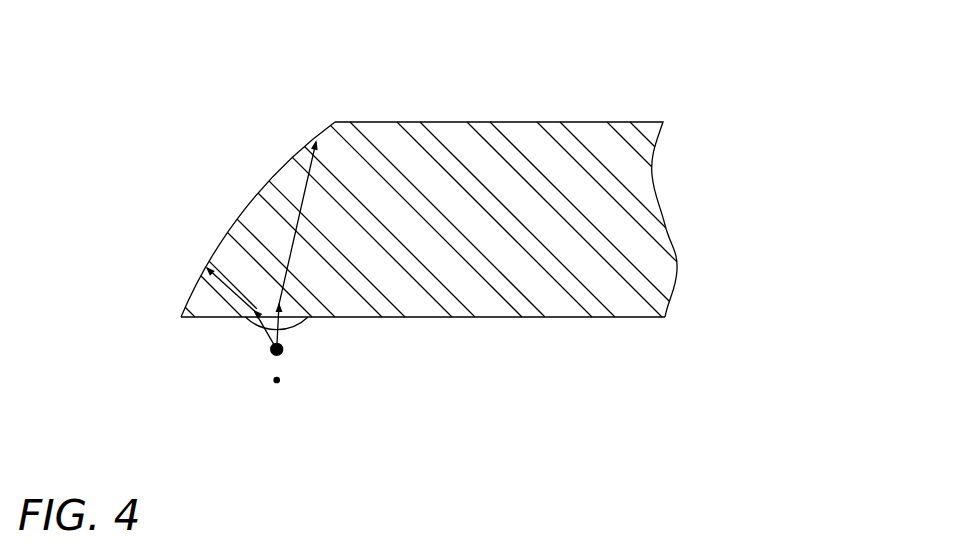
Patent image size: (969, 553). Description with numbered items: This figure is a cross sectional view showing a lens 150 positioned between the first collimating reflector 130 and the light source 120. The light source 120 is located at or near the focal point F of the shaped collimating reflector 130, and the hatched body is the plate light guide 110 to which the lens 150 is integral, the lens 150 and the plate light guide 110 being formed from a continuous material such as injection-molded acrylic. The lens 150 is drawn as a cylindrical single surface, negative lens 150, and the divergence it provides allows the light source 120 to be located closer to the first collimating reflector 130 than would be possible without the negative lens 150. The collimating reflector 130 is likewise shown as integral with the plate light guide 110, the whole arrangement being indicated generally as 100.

The optical device 100 is at (481, 234).
The plate light guide 110 is at (664, 218).
The light source 120 is at (270, 350).
The first collimating reflector 130 is at (240, 184).
The lens 150 is at (253, 294).
The focal point F is at (288, 392).